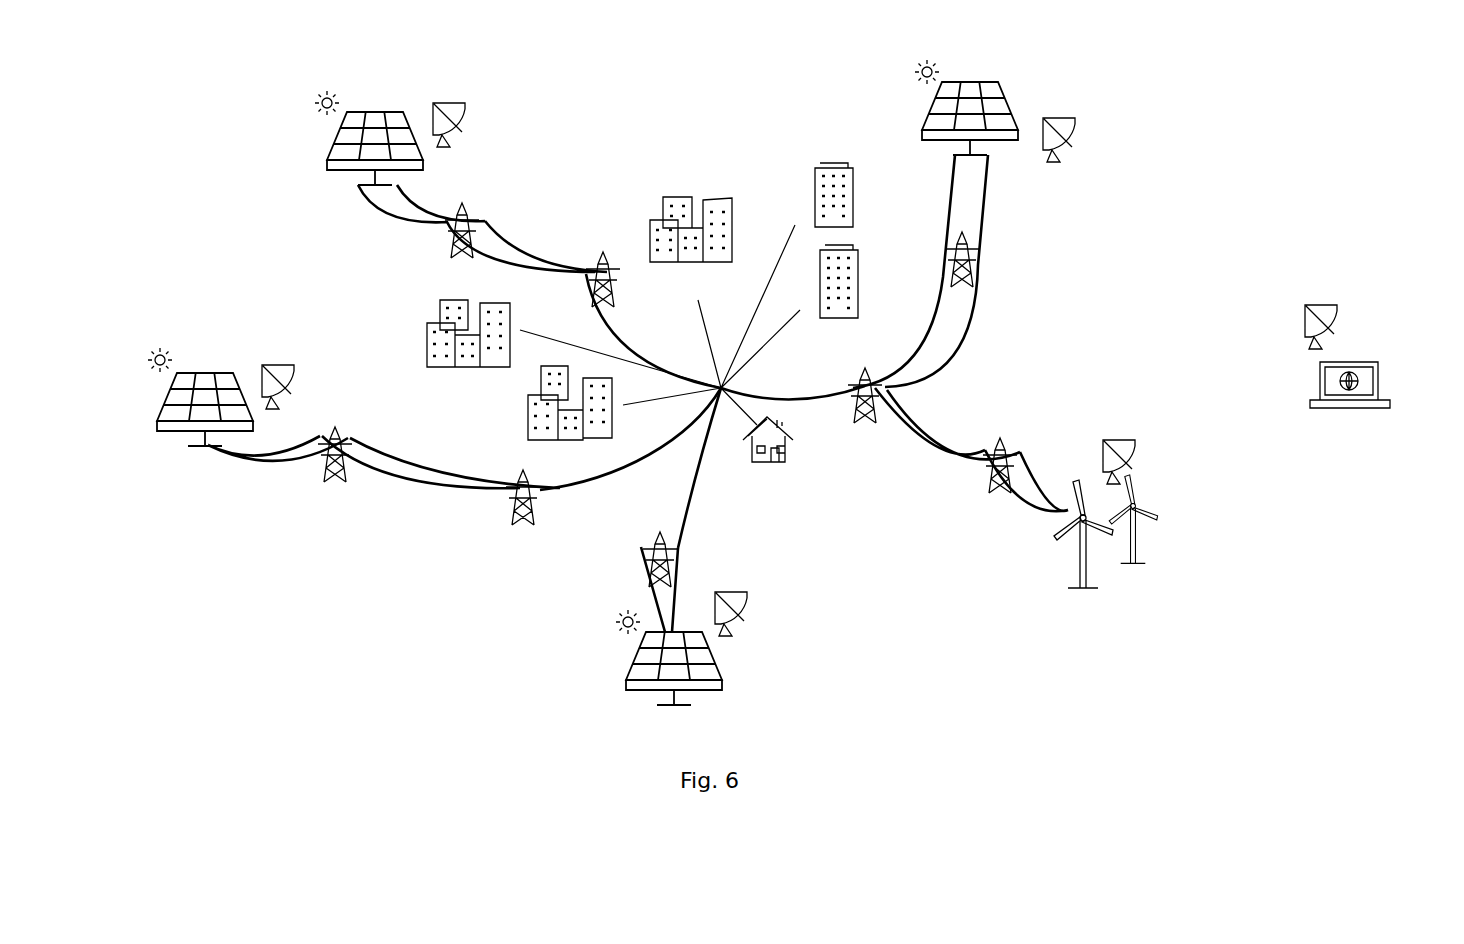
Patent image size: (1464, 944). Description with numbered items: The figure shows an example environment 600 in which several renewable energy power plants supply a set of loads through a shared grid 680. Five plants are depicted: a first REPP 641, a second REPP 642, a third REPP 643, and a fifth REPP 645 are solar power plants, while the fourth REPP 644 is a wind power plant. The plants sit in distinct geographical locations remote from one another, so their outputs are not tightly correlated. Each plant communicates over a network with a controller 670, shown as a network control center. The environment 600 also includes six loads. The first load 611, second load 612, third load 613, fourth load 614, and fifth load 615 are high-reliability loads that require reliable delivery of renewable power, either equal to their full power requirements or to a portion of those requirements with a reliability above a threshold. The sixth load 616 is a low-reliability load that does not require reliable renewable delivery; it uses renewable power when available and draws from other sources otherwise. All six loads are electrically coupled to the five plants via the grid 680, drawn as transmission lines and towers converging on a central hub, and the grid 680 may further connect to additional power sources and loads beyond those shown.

The environment 600 is at (172, 66).
The first load 611 is at (640, 222).
The second load 612 is at (804, 188).
The third load 613 is at (864, 286).
The fourth load 614 is at (425, 350).
The fifth load 615 is at (530, 378).
The sixth load 616 is at (805, 439).
The first REPP 641 is at (362, 106).
The second REPP 642 is at (195, 368).
The third REPP 643 is at (616, 665).
The fourth REPP 644 is at (1175, 556).
The fifth REPP 645 is at (958, 76).
The controller 670 is at (1370, 334).
The grid 680 is at (713, 404).